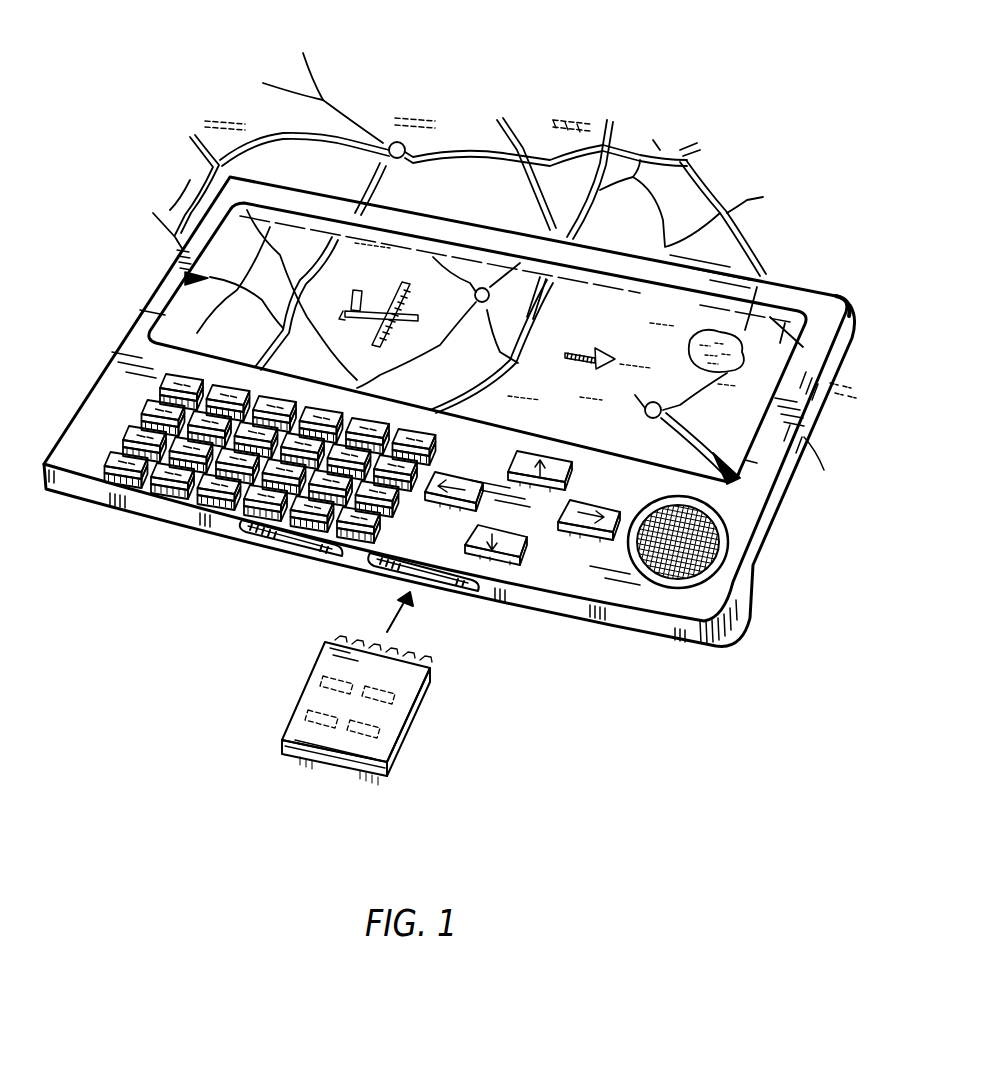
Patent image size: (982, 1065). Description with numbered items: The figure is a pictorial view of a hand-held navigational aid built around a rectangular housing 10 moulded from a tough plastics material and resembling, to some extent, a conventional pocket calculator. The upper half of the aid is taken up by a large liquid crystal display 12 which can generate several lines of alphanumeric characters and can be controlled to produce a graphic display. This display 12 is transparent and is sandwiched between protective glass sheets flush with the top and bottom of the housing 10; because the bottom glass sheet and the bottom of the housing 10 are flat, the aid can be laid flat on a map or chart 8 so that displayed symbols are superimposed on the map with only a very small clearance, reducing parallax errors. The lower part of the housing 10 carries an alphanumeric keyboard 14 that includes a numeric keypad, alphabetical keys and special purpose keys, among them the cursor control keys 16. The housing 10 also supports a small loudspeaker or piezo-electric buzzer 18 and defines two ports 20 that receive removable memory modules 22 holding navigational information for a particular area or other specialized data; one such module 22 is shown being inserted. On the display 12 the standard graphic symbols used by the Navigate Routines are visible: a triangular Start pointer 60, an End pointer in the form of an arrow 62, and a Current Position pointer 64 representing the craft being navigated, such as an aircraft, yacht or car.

The map or chart 8 is at (441, 138).
The housing 10 is at (740, 588).
The liquid crystal display 12 is at (747, 330).
The alphanumeric keyboard 14 is at (180, 478).
The cursor control keys 16 is at (508, 560).
The loudspeaker or piezo-electric buzzer 18 is at (700, 580).
The ports 20 is at (375, 560).
The removable memory module 22 is at (348, 735).
The start pointer 60 is at (185, 278).
The end pointer arrow 62 is at (592, 352).
The current position pointer 64 is at (400, 325).